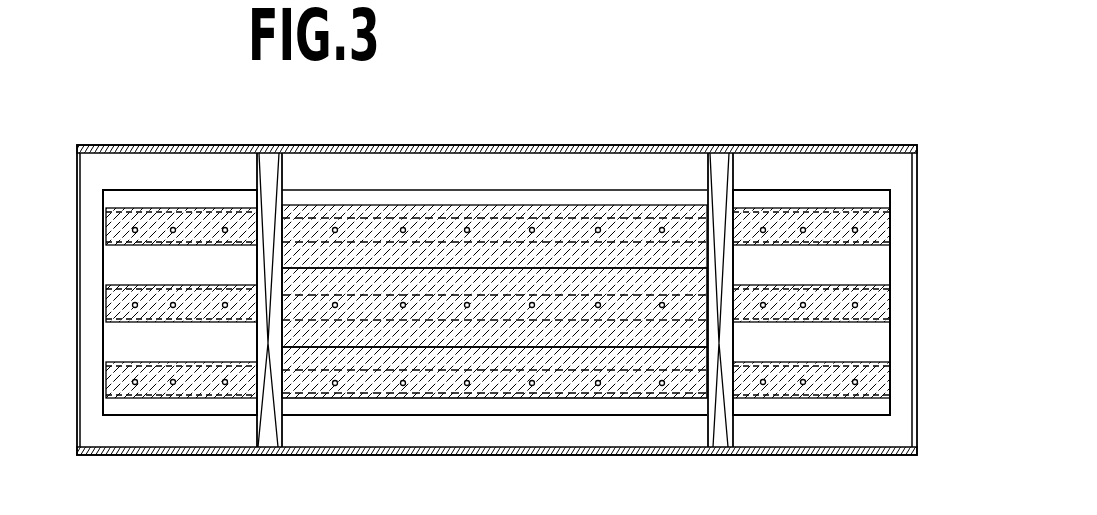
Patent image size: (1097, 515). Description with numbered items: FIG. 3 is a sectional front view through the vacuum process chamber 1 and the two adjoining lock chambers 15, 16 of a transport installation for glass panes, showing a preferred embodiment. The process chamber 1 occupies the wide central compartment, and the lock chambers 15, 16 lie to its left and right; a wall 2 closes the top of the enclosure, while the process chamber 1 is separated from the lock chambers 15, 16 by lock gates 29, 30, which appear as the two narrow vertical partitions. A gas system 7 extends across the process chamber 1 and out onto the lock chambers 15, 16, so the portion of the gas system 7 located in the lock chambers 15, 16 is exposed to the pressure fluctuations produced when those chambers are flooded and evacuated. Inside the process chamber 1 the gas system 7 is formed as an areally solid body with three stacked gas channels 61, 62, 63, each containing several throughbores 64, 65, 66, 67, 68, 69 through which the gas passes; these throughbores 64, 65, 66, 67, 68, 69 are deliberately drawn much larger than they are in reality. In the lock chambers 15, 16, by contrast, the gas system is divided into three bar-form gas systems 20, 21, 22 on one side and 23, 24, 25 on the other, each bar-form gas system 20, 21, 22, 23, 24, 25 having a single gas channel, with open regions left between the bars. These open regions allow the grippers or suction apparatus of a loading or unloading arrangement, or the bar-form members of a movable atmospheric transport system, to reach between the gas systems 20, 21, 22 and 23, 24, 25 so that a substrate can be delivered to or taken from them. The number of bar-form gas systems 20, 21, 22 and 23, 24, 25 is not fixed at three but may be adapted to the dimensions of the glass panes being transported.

The process chamber 1 is at (497, 265).
The housing top wall 2 is at (502, 145).
The gas system 7 is at (565, 192).
The lock chamber 15 is at (186, 145).
The lock chamber 16 is at (798, 145).
The bar-form gas system 20 is at (196, 240).
The bar-form gas system 21 is at (196, 312).
The bar-form gas system 22 is at (193, 392).
The bar-form gas system 23 is at (843, 235).
The bar-form gas system 24 is at (838, 308).
The bar-form gas system 25 is at (838, 382).
The lock gate 29 is at (278, 427).
The lock gate 30 is at (723, 432).
The gas channel 61 is at (629, 233).
The gas channel 62 is at (632, 310).
The gas channel 63 is at (642, 387).
The throughbore 64 is at (336, 227).
The throughbore 65 is at (404, 227).
The throughbore 66 is at (468, 227).
The throughbore 67 is at (533, 227).
The throughbore 68 is at (599, 227).
The throughbore 69 is at (663, 227).